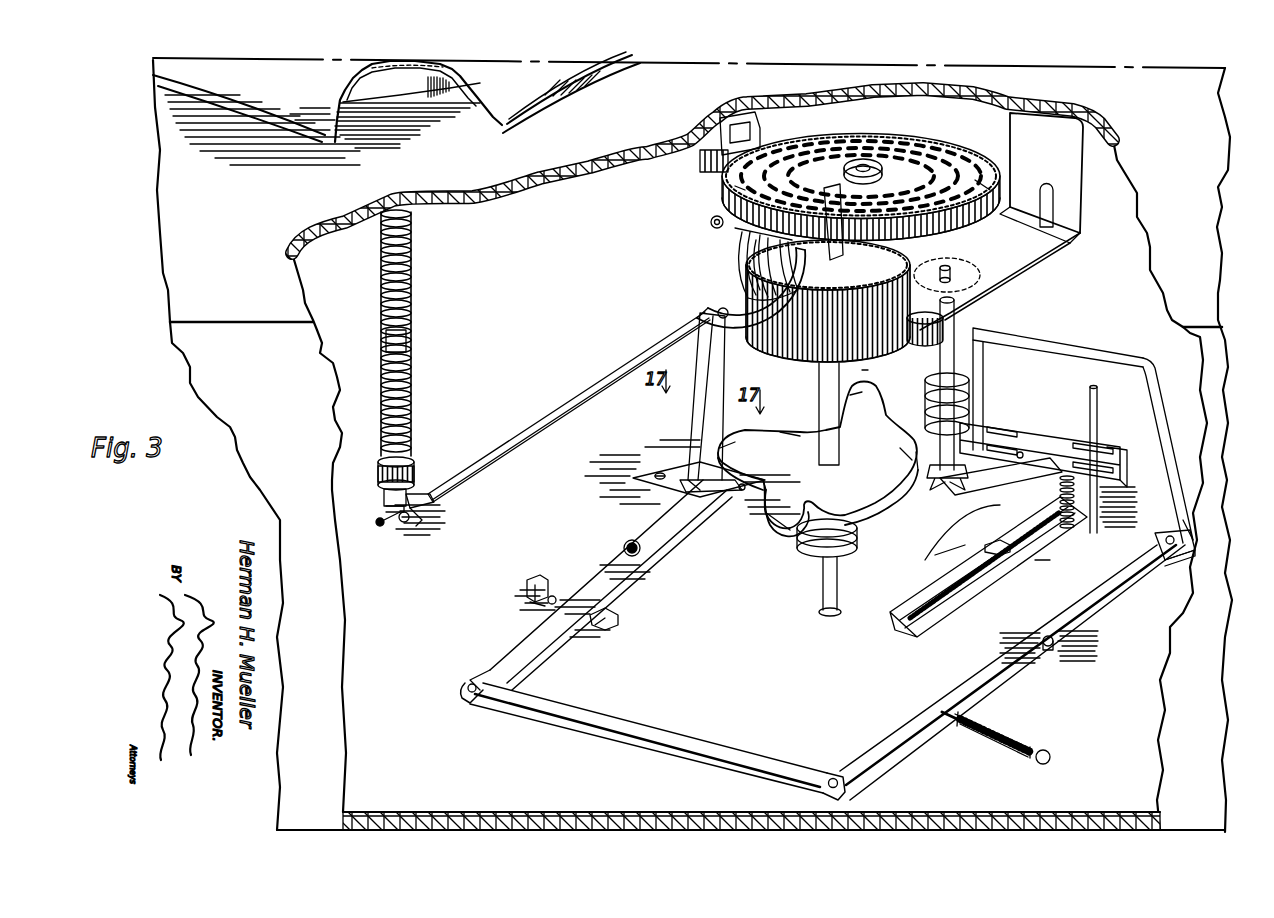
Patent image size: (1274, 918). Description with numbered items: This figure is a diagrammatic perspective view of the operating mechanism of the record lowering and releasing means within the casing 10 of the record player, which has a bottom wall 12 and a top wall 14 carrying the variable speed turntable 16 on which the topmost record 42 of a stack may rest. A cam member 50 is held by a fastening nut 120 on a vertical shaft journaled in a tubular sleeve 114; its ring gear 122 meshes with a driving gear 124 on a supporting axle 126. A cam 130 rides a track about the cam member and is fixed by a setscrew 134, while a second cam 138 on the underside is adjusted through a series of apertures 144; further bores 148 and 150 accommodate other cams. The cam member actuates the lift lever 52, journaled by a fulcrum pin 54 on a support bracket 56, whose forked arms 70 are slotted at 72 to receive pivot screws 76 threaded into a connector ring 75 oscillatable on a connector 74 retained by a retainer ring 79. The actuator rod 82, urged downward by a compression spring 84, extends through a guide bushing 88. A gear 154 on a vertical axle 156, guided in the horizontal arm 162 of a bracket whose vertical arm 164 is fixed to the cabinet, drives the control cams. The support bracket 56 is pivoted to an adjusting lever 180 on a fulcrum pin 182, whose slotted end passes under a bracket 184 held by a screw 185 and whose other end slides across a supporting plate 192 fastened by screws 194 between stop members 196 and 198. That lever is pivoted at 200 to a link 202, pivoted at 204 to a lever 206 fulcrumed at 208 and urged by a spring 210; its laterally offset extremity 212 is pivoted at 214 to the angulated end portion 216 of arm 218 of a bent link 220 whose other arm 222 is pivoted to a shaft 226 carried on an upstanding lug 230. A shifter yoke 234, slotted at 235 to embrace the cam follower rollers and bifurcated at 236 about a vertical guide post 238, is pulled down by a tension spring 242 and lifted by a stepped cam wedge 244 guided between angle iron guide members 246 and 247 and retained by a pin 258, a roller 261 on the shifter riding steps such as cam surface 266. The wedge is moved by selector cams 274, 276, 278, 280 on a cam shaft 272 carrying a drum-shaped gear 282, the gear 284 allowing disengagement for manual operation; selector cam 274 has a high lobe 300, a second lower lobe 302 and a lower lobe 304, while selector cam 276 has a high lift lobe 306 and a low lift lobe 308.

The casing 10 is at (1236, 590).
The bottom wall 12 is at (408, 812).
The top wall 14 is at (602, 184).
The variable speed turntable 16 is at (414, 87).
The topmost record 42 is at (567, 83).
The cam member 50 is at (887, 181).
The lift lever 52 is at (617, 367).
The fulcrum pin 54 is at (727, 313).
The support bracket 56 is at (727, 368).
The forked arms 70 is at (432, 500).
The slots 72 is at (418, 515).
The connector 74 is at (384, 492).
The connector ring 75 is at (386, 509).
The pivot screws 76 is at (405, 522).
The retainer ring 79 is at (392, 522).
The actuator rod 82 is at (409, 340).
The compression spring 84 is at (413, 285).
The guide bushing 88 is at (411, 458).
The tubular sleeve 114 is at (870, 375).
The fastening nut 120 is at (903, 177).
The ring gear 122 is at (997, 193).
The driving gear 124 is at (757, 130).
The supporting axle 126 is at (700, 168).
The cam 130 is at (747, 253).
The setscrew 134 is at (711, 222).
The second cam 138 is at (750, 240).
The apertures 144 is at (980, 170).
The bores 148 is at (827, 150).
The bores 150 is at (863, 159).
The gear 154 is at (1010, 248).
The vertical axle 156 is at (955, 333).
The horizontal arm 162 is at (1010, 267).
The vertical arm 164 is at (1067, 190).
The adjusting lever 180 is at (620, 577).
The fulcrum pin 182 is at (632, 542).
The bracket 184 is at (733, 497).
The screw 185 is at (662, 472).
The supporting plate 192 is at (557, 597).
The fastening screws 194 is at (597, 620).
The stop member 196 is at (537, 580).
The stop member 198 is at (620, 620).
The pivot 200 is at (473, 690).
The link 202 is at (697, 747).
The pivot 204 is at (834, 778).
The lever 206 is at (917, 727).
The fulcrum 208 is at (1049, 652).
The spring 210 is at (1003, 737).
The laterally offset extremity 212 is at (1158, 543).
The pivotal connection 214 is at (1168, 535).
The angulated end portion 216 is at (1183, 547).
The arm 218 is at (1183, 507).
The bent link 220 is at (1153, 400).
The arm 222 is at (1050, 350).
The shaft 226 is at (977, 362).
The upstanding lug 230 is at (946, 431).
The shifter yoke 234 is at (1051, 437).
The slot 235 is at (1007, 428).
The slot 236 is at (1110, 445).
The vertical guide post 238 is at (1097, 410).
The tension spring 242 is at (1073, 530).
The stepped cam wedge 244 is at (977, 527).
The angle iron guide member 246 is at (988, 576).
The angle iron guide member 247 is at (1040, 543).
The retaining pin 258 is at (1020, 547).
The roller 261 is at (1040, 473).
The cam surface 266 is at (1022, 450).
The cam shaft 272 is at (830, 378).
The selector cam 274 is at (807, 447).
The selector cam 276 is at (860, 493).
The selector cam 278 is at (880, 517).
The selector cam 280 is at (812, 553).
The drum-shaped gear 282 is at (828, 301).
The gear 284 is at (912, 343).
The high lobe 300 is at (868, 401).
The second lower lobe 302 is at (733, 440).
The lower lobe 304 is at (820, 472).
The high lift lobe 306 is at (896, 449).
The low lift lobe 308 is at (783, 517).